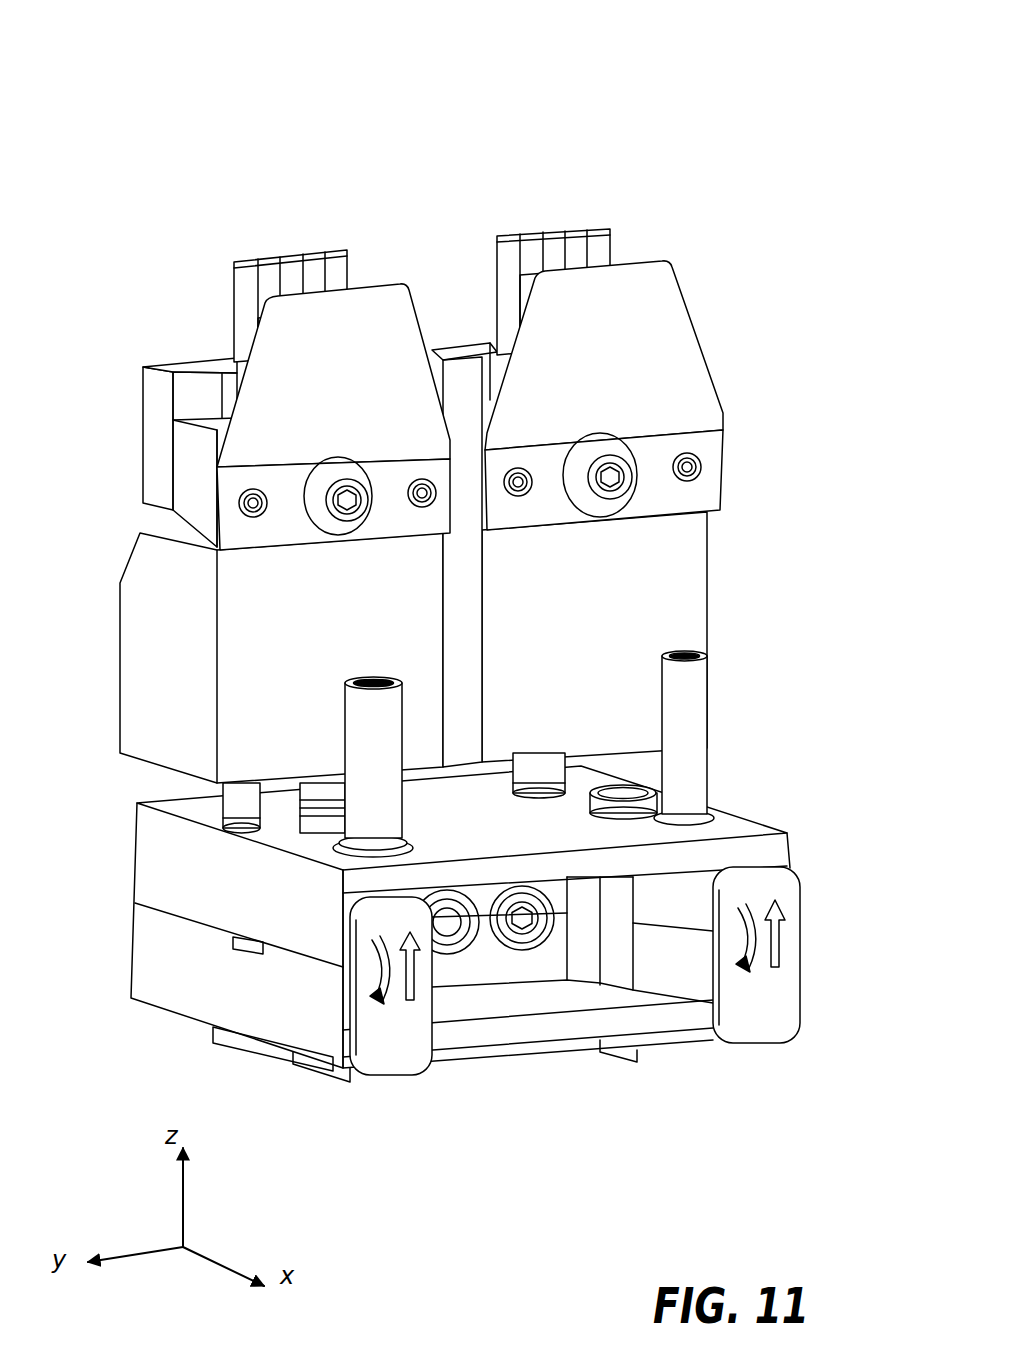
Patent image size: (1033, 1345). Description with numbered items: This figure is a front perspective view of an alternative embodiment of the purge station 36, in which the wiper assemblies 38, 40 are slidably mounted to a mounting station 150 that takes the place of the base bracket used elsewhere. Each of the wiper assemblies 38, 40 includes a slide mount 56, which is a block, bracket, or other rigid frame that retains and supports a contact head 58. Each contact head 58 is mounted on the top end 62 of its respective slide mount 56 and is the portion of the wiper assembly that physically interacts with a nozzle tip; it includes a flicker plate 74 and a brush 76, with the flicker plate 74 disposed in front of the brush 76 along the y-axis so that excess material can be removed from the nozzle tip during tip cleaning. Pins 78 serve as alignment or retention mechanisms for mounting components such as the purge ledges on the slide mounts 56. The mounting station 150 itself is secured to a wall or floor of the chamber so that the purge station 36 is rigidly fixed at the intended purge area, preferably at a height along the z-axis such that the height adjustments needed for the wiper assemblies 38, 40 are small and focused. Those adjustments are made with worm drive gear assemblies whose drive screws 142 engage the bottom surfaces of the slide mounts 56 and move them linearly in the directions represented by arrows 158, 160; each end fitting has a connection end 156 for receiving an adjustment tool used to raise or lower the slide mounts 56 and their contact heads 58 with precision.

The purge station 36 is at (815, 118).
The wiper assembly 38 is at (337, 198).
The wiper assembly 40 is at (590, 182).
The slide mount 56 is at (150, 622).
The contact head 58 is at (104, 410).
The top end 62 is at (167, 527).
The flicker plate 74 is at (277, 378).
The brush 76 is at (263, 256).
The pin 78 is at (377, 757).
The drive screw 142 is at (550, 768).
The mounting station 150 is at (108, 964).
The connection end 156 is at (522, 920).
The arrow 158 is at (416, 984).
The arrow 160 is at (776, 937).